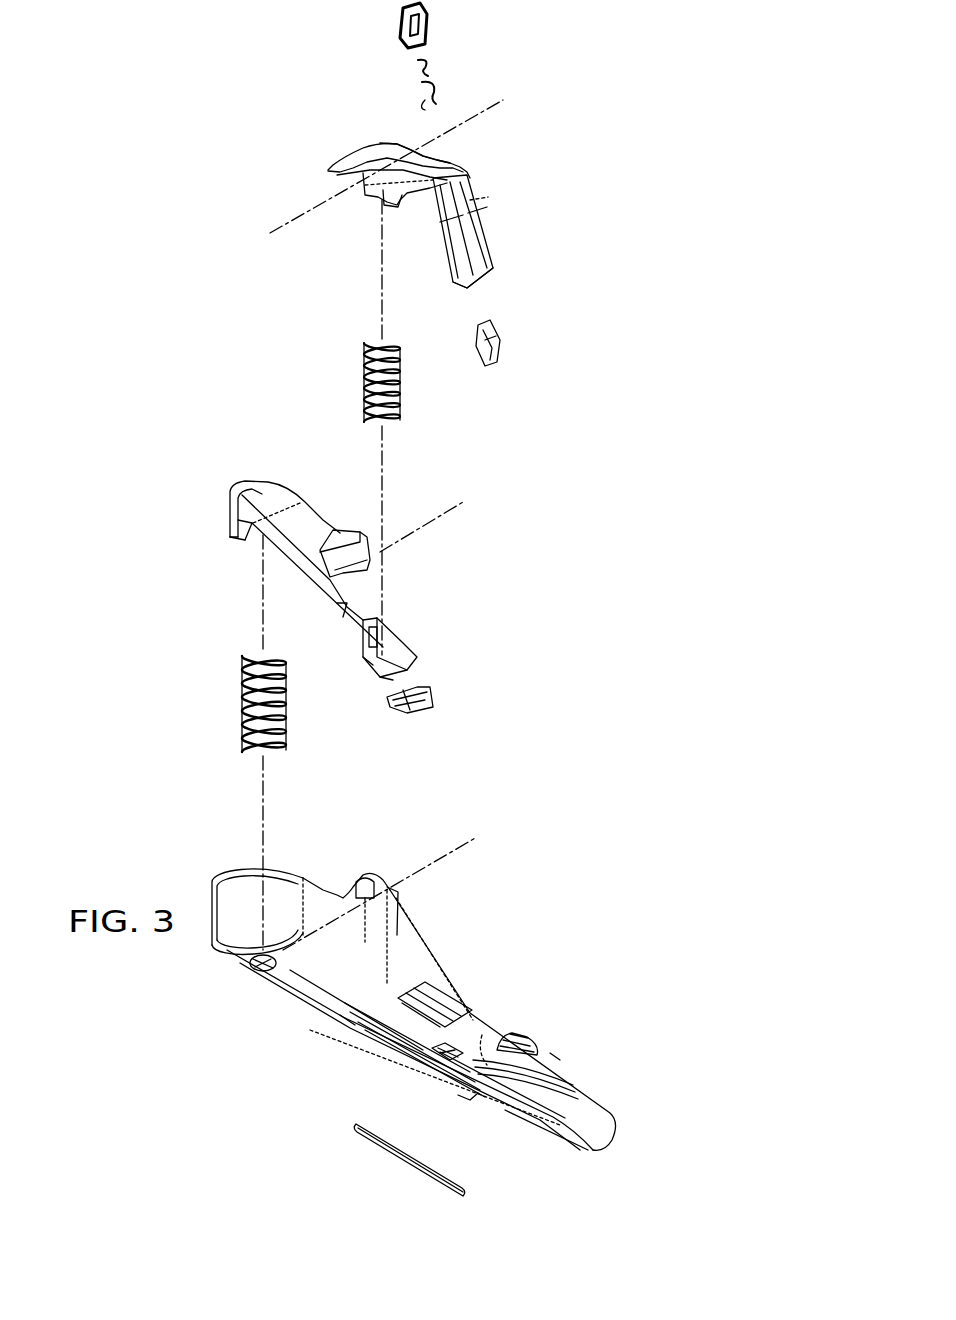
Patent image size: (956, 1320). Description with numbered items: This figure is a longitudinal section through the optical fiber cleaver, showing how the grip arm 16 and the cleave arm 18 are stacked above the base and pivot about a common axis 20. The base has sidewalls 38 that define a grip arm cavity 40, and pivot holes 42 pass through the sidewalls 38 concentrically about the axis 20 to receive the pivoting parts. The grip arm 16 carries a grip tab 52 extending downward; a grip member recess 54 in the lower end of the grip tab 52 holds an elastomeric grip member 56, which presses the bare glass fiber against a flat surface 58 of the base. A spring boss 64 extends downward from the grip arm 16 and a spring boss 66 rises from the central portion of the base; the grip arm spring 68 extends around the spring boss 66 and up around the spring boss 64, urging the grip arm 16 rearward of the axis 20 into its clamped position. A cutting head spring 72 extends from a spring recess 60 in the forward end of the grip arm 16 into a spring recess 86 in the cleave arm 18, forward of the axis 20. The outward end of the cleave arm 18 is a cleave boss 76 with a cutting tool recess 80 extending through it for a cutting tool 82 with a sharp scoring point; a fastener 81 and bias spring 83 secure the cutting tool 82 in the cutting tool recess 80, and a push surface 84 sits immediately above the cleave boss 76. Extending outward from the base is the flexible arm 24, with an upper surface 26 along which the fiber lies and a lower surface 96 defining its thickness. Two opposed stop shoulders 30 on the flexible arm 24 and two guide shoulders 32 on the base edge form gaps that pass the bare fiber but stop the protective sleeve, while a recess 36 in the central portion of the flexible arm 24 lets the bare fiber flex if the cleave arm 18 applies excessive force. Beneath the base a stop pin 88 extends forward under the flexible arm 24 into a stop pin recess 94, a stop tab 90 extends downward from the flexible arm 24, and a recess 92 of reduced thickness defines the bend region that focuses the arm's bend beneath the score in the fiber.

The grip arm 16 is at (375, 587).
The cleave arm 18 is at (468, 234).
The axis 20 is at (490, 107).
The flexible arm 24 is at (550, 1050).
The upper surface 26 is at (495, 1030).
The stop shoulders 30 is at (493, 1036).
The guide shoulders 32 is at (425, 982).
The recess 36 is at (427, 1057).
The sidewalls 38 is at (405, 927).
The grip arm cavity 40 is at (434, 1007).
The pivot holes 42 is at (365, 905).
The grip tab 52 is at (340, 703).
The grip member recess 54 is at (420, 667).
The grip member 56 is at (435, 706).
The flat surface 58 is at (353, 1017).
The spring recess 60 is at (395, 627).
The spring boss 64 is at (248, 545).
The spring boss 66 is at (248, 964).
The grip arm spring 68 is at (243, 694).
The cutting head spring 72 is at (366, 387).
The cleave boss 76 is at (547, 257).
The cutting tool recess 80 is at (462, 283).
The fastener 81 is at (398, 30).
The cutting tool 82 is at (498, 337).
The bias spring 83 is at (420, 82).
The push surface 84 is at (452, 164).
The spring recess 86 is at (374, 206).
The stop pin 88 is at (378, 1162).
The stop tab 90 is at (468, 1099).
The recess 92 is at (460, 1062).
The stop pin recess 94 is at (363, 1047).
The lower surface 96 is at (533, 1160).